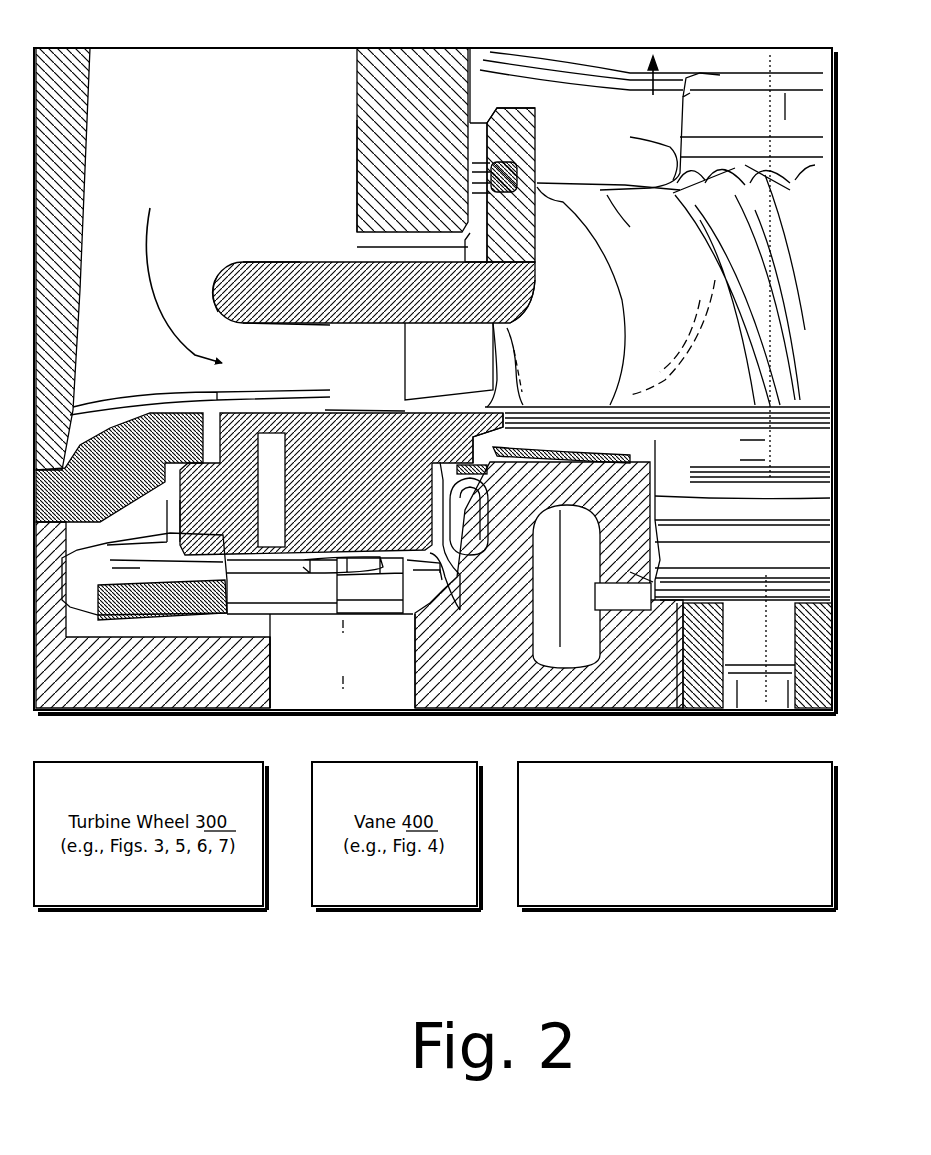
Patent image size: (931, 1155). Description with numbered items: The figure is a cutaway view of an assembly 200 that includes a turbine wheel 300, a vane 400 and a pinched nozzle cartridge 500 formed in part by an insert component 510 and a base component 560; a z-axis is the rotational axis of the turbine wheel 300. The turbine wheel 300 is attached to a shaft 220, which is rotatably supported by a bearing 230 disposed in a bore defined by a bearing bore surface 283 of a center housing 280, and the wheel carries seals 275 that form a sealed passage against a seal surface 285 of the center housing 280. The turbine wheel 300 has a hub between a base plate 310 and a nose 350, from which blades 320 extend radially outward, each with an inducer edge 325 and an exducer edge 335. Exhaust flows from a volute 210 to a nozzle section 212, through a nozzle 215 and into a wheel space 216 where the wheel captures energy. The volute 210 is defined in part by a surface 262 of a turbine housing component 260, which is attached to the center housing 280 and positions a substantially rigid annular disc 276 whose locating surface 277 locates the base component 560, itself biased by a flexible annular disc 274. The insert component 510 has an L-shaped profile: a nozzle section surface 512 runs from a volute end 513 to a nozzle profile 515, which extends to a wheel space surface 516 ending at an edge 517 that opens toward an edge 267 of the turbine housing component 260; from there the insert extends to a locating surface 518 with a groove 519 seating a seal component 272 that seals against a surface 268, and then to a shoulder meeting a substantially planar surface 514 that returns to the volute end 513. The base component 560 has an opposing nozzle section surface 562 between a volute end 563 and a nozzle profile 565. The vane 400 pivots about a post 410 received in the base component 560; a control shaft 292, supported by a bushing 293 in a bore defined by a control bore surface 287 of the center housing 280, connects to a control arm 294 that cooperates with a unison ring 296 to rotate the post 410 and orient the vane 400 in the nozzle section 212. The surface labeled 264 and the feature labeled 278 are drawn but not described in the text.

The assembly 200 is at (526, 30).
The volute 210 is at (200, 187).
The nozzle section 212 is at (280, 369).
The nozzle 215 is at (530, 358).
The wheel space 216 is at (620, 167).
The shaft 220 is at (745, 650).
The bearing 230 is at (713, 606).
The turbine housing component 260 is at (399, 158).
The surface 262 is at (357, 158).
The housing wall lower surface 264 is at (365, 234).
The edge 267 is at (557, 67).
The surface 268 is at (467, 110).
The seal component 272 is at (520, 169).
The flexible annular disc 274 is at (672, 451).
The seals 275 is at (764, 515).
The substantially rigid annular disc 276 is at (173, 408).
The locating surface 277 is at (170, 498).
The seal band 278 is at (488, 486).
The center housing 280 is at (89, 686).
The bearing bore surface 283 is at (668, 655).
The seal surface 285 is at (641, 491).
The control bore surface 287 is at (262, 678).
The control shaft 292 is at (360, 556).
The bushing 293 is at (326, 668).
The control arm 294 is at (347, 606).
The unison ring 296 is at (112, 550).
The turbine wheel 300 is at (720, 127).
The base plate 310 is at (738, 415).
The blades 320 is at (650, 293).
The inducer edge 325 is at (624, 358).
The exducer edge 335 is at (622, 226).
The nose 350 is at (745, 74).
The vane 400 is at (430, 377).
The post 410 is at (447, 600).
The pinched nozzle cartridge 500 is at (814, 831).
The insert component 510 is at (341, 306).
The nozzle section surface 512 is at (276, 327).
The volute end 513 is at (215, 294).
The substantially planar surface 514 is at (278, 258).
The nozzle profile 515 is at (508, 314).
The wheel space surface 516 is at (538, 258).
The edge 517 is at (537, 110).
The locating surface 518 is at (476, 122).
The groove 519 is at (537, 148).
The base component 560 is at (340, 466).
The opposing nozzle section surface 562 is at (284, 404).
The volute end 563 is at (204, 402).
The nozzle profile 565 is at (478, 425).